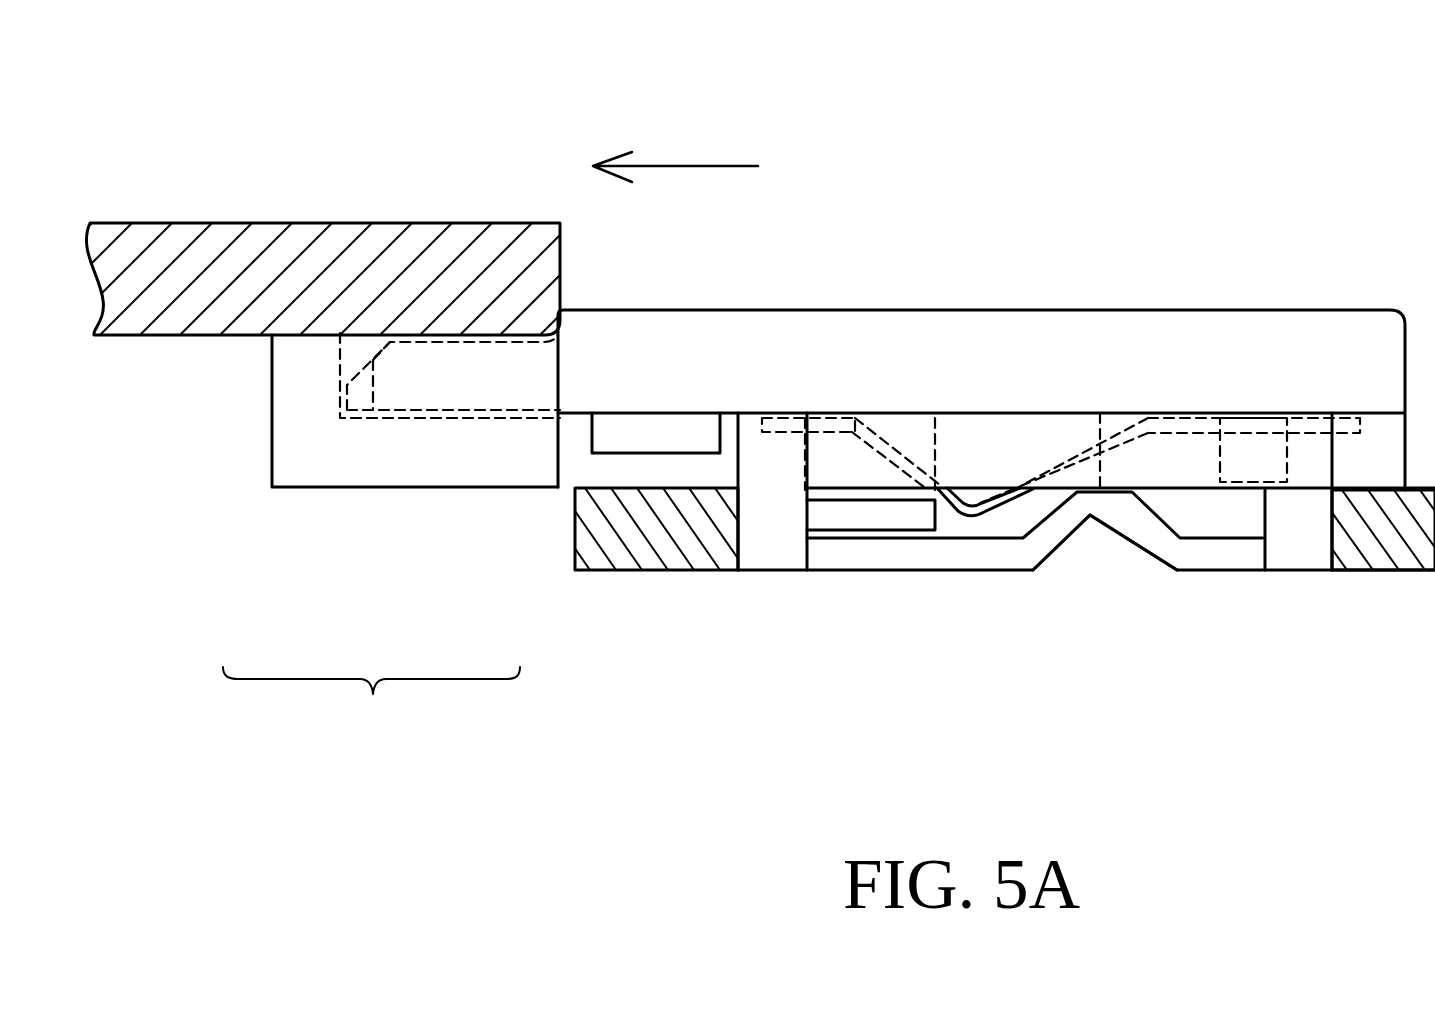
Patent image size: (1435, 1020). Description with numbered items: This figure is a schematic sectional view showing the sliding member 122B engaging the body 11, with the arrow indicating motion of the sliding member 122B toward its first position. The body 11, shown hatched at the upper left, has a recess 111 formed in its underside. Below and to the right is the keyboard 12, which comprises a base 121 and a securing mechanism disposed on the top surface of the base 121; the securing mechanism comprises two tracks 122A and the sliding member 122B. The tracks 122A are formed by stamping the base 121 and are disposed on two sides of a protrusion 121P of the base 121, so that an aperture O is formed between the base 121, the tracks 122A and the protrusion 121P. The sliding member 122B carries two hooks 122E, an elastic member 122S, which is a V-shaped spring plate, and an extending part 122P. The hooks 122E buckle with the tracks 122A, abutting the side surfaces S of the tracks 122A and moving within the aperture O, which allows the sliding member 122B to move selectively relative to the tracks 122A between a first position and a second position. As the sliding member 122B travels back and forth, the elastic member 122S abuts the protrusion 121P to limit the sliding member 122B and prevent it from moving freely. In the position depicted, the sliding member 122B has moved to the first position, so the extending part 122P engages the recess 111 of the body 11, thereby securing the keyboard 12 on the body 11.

The body 11 is at (233, 245).
The recess 111 is at (352, 363).
The extending part 122P is at (480, 367).
The sliding member 122B is at (630, 365).
The tracks 122A is at (768, 517).
The keyboard 12 is at (371, 709).
The base 121 is at (652, 543).
The aperture O is at (995, 520).
The protrusion 121P is at (1100, 518).
The side surfaces S is at (1197, 500).
The hooks 122E is at (868, 510).
The elastic member 122S is at (978, 512).